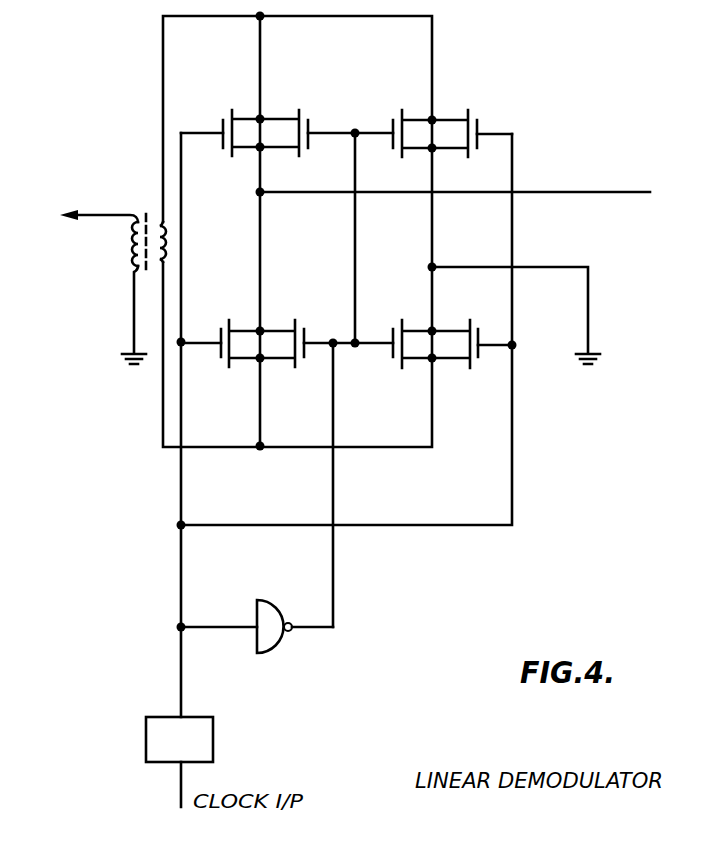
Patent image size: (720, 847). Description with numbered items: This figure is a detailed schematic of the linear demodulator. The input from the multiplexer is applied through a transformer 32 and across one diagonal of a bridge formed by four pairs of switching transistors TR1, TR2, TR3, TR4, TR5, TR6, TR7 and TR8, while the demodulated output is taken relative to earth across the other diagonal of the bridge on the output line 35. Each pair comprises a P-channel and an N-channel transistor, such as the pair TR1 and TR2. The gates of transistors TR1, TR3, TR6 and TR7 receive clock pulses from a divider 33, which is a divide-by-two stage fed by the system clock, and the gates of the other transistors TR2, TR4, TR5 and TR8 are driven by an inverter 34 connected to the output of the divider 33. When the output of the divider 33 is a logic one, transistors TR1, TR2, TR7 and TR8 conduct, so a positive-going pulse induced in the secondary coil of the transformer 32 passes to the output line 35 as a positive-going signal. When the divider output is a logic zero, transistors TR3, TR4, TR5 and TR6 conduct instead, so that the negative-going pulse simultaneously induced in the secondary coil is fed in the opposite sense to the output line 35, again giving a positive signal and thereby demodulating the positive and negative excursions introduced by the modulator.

The transformer 32 is at (128, 246).
The divider 33 is at (213, 733).
The inverter 34 is at (281, 611).
The output line 35 is at (567, 193).
The switching transistor TR1 is at (228, 117).
The switching transistor TR2 is at (293, 117).
The switching transistor TR3 is at (230, 330).
The switching transistor TR4 is at (293, 330).
The switching transistor TR5 is at (399, 117).
The switching transistor TR6 is at (464, 117).
The switching transistor TR7 is at (403, 330).
The switching transistor TR8 is at (466, 330).